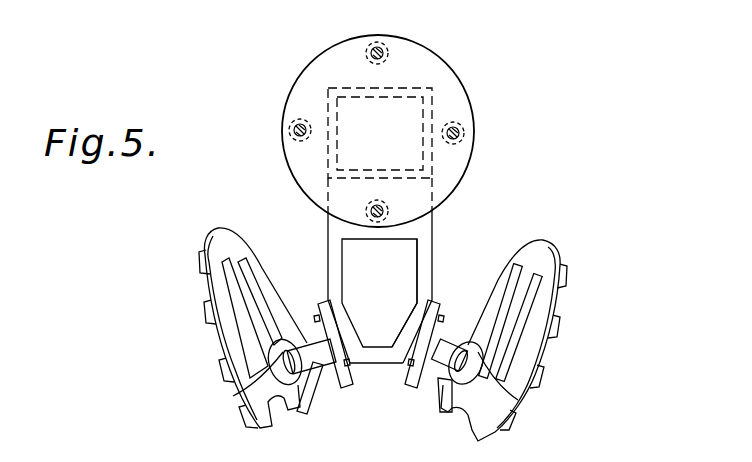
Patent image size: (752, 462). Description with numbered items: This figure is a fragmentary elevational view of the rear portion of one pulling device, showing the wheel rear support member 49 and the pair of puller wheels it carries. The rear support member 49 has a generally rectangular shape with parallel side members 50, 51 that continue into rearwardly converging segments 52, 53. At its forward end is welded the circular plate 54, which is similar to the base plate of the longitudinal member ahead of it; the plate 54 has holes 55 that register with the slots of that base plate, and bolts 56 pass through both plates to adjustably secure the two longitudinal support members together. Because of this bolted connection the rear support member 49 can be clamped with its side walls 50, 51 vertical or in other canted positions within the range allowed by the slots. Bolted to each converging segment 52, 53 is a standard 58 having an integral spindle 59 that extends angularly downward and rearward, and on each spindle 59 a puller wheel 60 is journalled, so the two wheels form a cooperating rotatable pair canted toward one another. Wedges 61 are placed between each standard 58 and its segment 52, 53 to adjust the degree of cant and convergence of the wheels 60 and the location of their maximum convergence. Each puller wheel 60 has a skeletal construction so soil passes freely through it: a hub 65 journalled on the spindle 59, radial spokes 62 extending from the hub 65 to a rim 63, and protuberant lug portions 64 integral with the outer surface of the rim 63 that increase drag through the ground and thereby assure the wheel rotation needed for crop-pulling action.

The wheel rear support member 49 is at (341, 226).
The side member 50 is at (327, 253).
The side member 51 is at (432, 258).
The rearwardly converging segment 52 is at (343, 322).
The rearwardly converging segment 53 is at (410, 335).
The circular plate 54 is at (432, 74).
The hole 55 is at (381, 52).
The bolt 56 is at (366, 41).
The standard 58 is at (350, 364).
The spindle 59 is at (436, 388).
The puller wheel 60 is at (197, 294).
The wedge 61 is at (320, 305).
The radial spoke 62 is at (250, 318).
The rim 63 is at (214, 228).
The protuberant lug portion 64 is at (198, 260).
The hub 65 is at (260, 388).